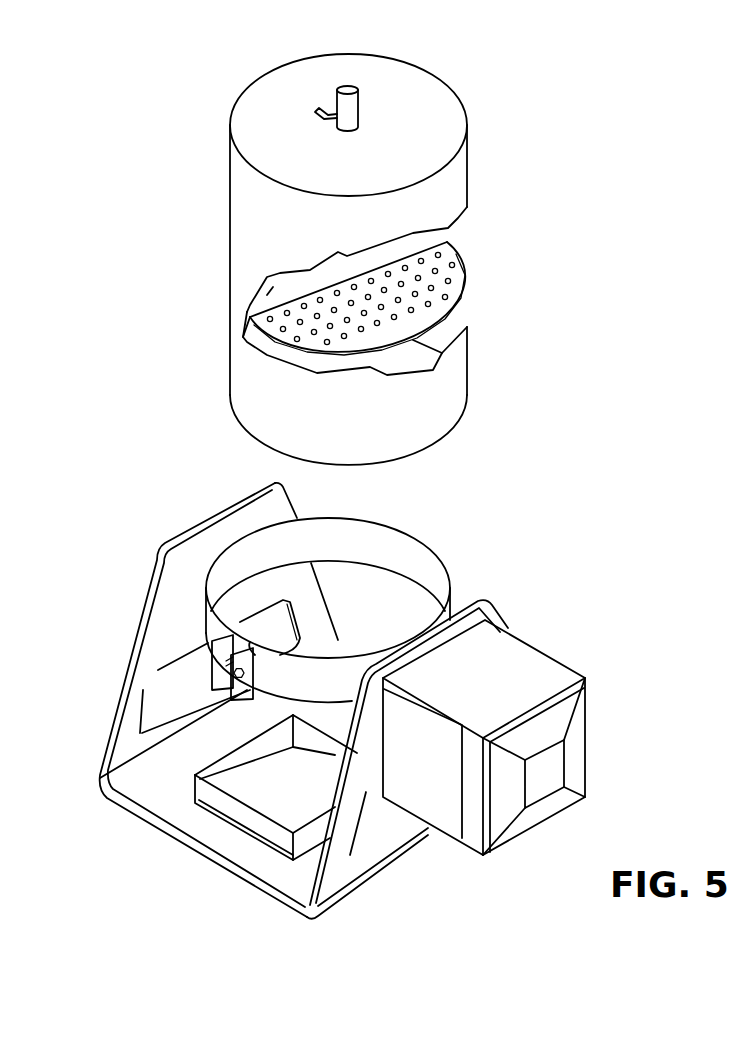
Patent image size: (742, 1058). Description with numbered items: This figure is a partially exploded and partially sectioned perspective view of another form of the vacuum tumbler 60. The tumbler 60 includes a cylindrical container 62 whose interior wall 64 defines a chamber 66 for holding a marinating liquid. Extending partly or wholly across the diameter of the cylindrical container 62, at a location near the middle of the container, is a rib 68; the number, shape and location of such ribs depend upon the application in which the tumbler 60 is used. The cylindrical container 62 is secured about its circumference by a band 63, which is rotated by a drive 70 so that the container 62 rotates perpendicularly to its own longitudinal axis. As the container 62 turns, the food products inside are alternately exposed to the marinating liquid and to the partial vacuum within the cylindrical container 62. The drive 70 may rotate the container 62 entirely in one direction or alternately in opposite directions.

The vacuum tumbler 60 is at (557, 460).
The cylindrical container 62 is at (433, 405).
The band 63 is at (413, 562).
The interior wall 64 is at (252, 305).
The chamber 66 is at (387, 252).
The rib 68 is at (437, 301).
The drive 70 is at (540, 722).